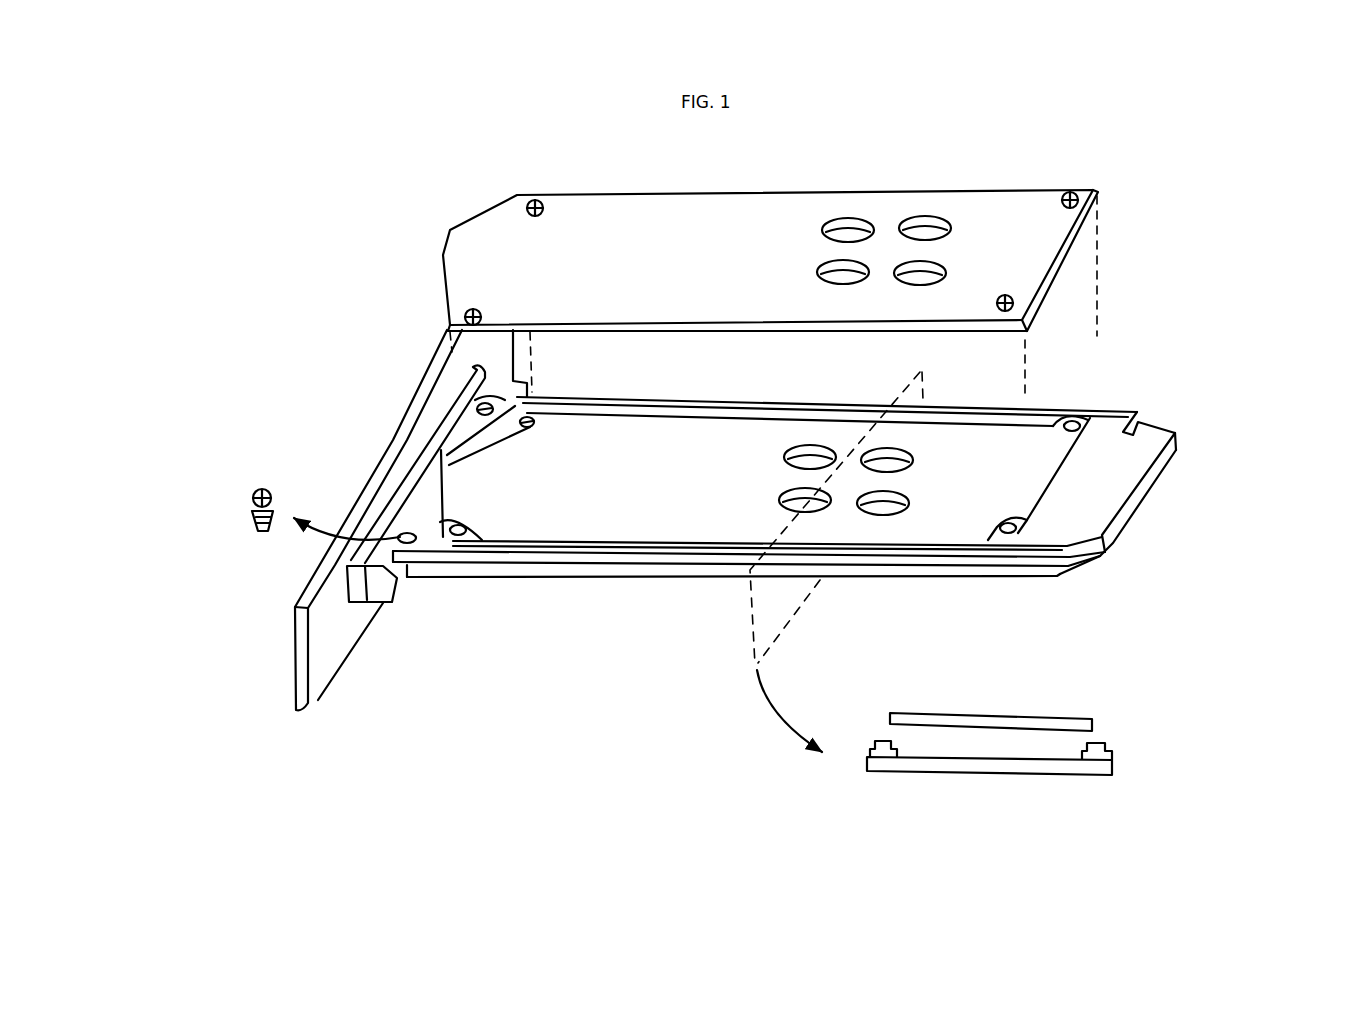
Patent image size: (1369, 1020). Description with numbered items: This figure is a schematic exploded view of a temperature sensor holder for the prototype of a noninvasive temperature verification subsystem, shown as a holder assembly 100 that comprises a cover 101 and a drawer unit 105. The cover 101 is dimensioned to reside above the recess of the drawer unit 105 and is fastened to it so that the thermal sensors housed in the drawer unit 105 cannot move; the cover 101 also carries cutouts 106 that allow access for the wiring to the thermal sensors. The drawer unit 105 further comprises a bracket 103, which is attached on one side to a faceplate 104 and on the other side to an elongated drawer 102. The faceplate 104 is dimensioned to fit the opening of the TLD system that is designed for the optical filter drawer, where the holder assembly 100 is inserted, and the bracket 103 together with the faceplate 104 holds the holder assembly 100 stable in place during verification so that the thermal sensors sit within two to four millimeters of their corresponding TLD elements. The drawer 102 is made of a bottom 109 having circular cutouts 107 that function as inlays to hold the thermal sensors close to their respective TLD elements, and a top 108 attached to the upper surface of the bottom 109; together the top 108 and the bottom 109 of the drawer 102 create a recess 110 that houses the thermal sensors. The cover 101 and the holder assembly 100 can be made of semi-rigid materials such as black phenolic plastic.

The holder assembly 100 is at (195, 438).
The cover 101 is at (482, 262).
The elongated drawer 102 is at (437, 570).
The bracket 103 is at (383, 597).
The faceplate 104 is at (317, 663).
The drawer unit 105 is at (1218, 500).
The cutouts 106 is at (928, 228).
The circular cutouts 107 is at (1040, 450).
The top 108 is at (1095, 743).
The bottom 109 is at (1102, 767).
The recess 110 is at (1064, 753).